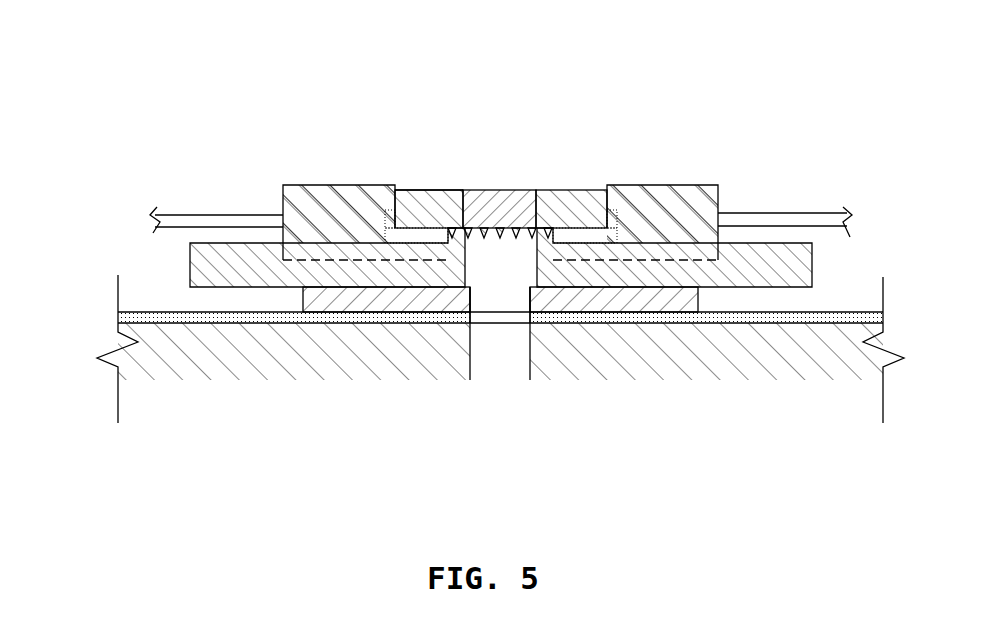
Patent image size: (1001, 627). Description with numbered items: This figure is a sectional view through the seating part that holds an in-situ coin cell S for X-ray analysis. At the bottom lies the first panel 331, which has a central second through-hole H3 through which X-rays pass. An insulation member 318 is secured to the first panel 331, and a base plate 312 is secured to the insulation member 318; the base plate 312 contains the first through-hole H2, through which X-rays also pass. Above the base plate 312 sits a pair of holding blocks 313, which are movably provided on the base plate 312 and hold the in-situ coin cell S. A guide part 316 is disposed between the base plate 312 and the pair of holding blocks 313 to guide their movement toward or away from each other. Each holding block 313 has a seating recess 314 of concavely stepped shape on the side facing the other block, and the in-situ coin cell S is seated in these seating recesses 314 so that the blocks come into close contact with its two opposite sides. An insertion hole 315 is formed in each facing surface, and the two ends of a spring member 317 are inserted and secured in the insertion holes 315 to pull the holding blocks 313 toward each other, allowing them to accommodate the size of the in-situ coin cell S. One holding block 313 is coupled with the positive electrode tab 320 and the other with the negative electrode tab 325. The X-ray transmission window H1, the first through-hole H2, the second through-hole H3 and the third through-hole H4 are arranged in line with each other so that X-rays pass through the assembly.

The base plate 312 is at (307, 300).
The holding blocks 313 is at (313, 188).
The seating recess 314 is at (485, 148).
The insertion hole 315 is at (618, 228).
The guide part 316 is at (195, 265).
The spring member 317 is at (520, 238).
The insulation member 318 is at (163, 317).
The positive electrode tab 320 is at (198, 217).
The negative electrode tab 325 is at (773, 218).
The first panel 331 is at (205, 363).
The in-situ coin cell S is at (433, 195).
The X-ray transmission window H1 is at (508, 195).
The first through-hole H2 is at (512, 291).
The second through-hole H3 is at (508, 358).
The third through-hole H4 is at (492, 317).